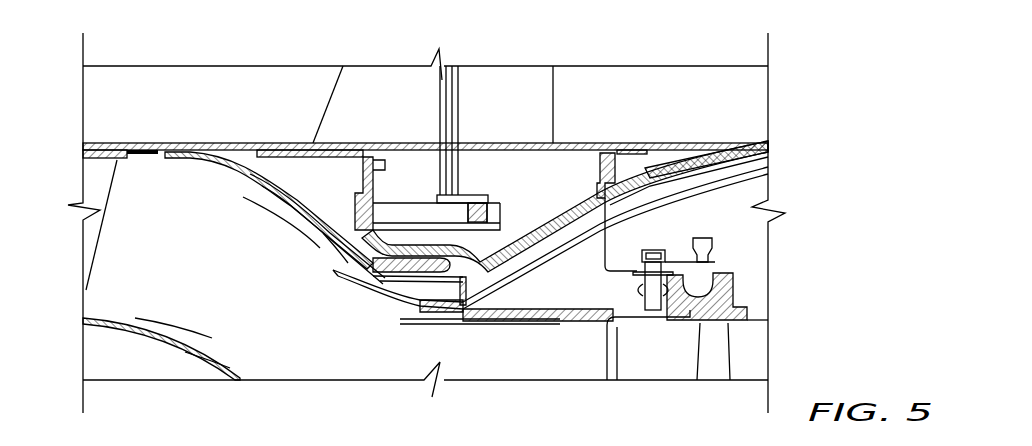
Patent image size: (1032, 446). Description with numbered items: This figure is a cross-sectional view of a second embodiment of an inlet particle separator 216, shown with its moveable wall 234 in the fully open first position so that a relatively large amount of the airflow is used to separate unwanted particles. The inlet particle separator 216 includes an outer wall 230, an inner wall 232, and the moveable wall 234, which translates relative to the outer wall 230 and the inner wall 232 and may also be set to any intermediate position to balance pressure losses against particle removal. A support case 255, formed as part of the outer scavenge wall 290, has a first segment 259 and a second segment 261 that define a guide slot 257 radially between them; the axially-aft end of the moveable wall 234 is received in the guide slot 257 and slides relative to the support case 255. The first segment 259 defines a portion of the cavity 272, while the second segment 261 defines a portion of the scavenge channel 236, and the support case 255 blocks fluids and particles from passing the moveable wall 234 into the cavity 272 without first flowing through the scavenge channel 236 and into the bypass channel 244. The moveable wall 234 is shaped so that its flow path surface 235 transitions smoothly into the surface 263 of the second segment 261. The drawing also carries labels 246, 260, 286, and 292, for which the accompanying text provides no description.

The inlet particle separator 216 is at (133, 262).
The outer wall 230 is at (360, 303).
The inner wall 232 is at (163, 328).
The moveable wall 234 is at (298, 214).
The flow path surface 235 is at (327, 228).
The scavenge channel 236 is at (709, 168).
The bypass channel 244 is at (150, 105).
The combustion chamber 246 is at (122, 298).
The support case 255 is at (485, 242).
The guide slot 257 is at (447, 276).
The first segment 259 is at (433, 245).
The bracket 260 is at (418, 192).
The second segment 261 is at (465, 293).
The surface of the second segment 263 is at (437, 276).
The cavity 272 is at (540, 177).
The outer plate 286 is at (115, 140).
The outer scavenge wall 290 is at (655, 160).
The inner diffuser wall 292 is at (723, 173).